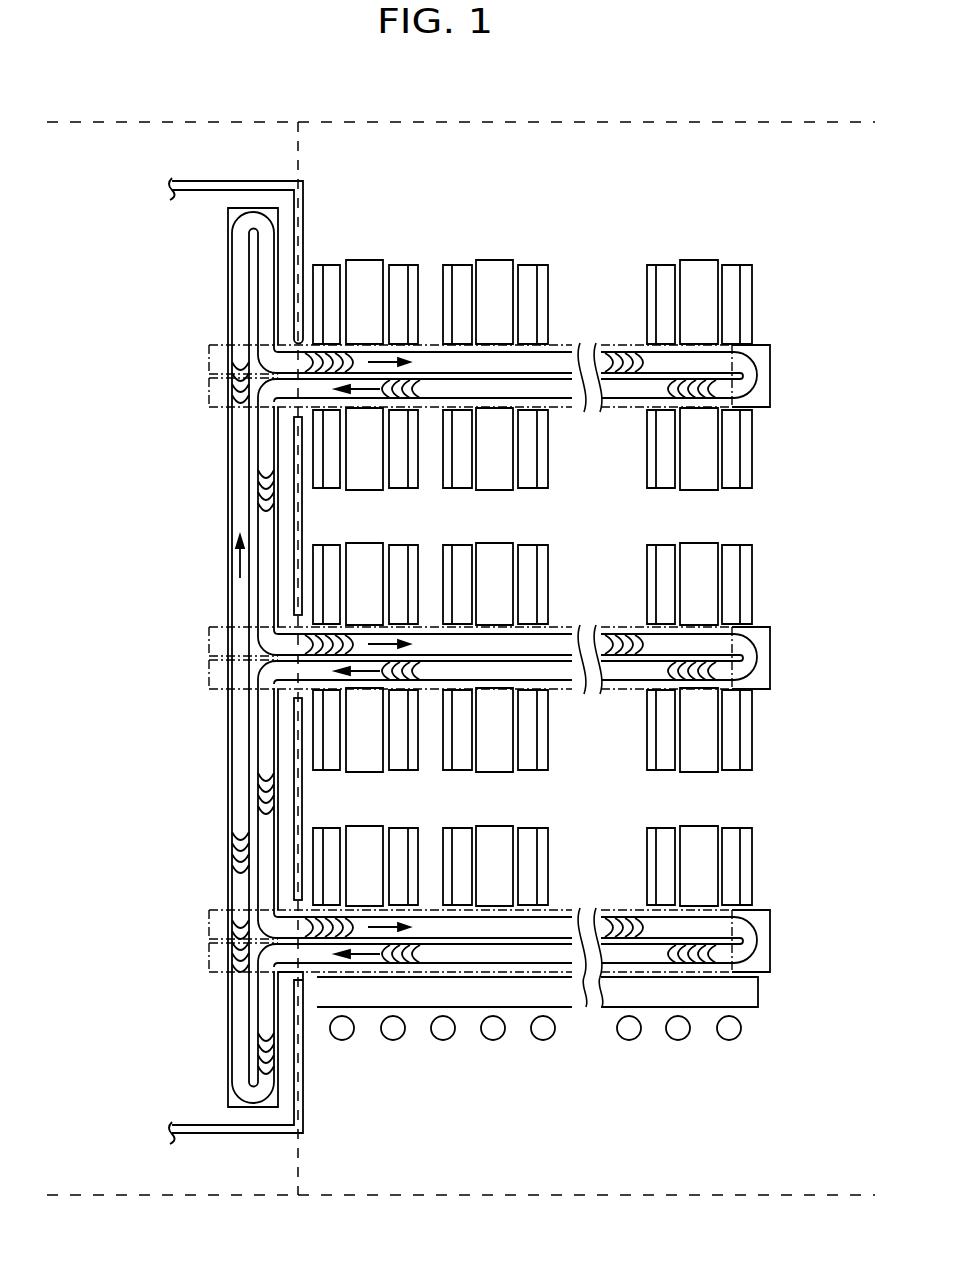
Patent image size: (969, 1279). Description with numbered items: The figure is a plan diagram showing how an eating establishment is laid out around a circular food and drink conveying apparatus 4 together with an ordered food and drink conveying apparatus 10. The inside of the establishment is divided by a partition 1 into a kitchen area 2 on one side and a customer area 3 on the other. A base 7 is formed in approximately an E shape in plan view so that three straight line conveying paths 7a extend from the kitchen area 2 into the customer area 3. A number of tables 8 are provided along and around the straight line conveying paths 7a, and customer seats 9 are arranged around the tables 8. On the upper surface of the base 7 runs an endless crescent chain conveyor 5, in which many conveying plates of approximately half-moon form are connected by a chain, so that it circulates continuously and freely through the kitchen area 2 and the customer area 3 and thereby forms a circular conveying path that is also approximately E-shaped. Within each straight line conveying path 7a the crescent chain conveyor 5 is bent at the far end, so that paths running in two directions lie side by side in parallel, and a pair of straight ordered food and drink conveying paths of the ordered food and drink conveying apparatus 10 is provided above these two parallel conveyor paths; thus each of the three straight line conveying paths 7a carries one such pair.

The partition 1 is at (304, 229).
The kitchen area 2 is at (97, 170).
The customer area 3 is at (601, 170).
The circular food and drink conveying apparatus 4 is at (757, 355).
The crescent chain conveyor 5 is at (717, 391).
The base 7 is at (227, 521).
The straight line conveying path 7a is at (765, 375).
The table 8 is at (499, 270).
The customer seat 9 is at (737, 280).
The ordered food and drink conveying apparatus 10 is at (573, 342).